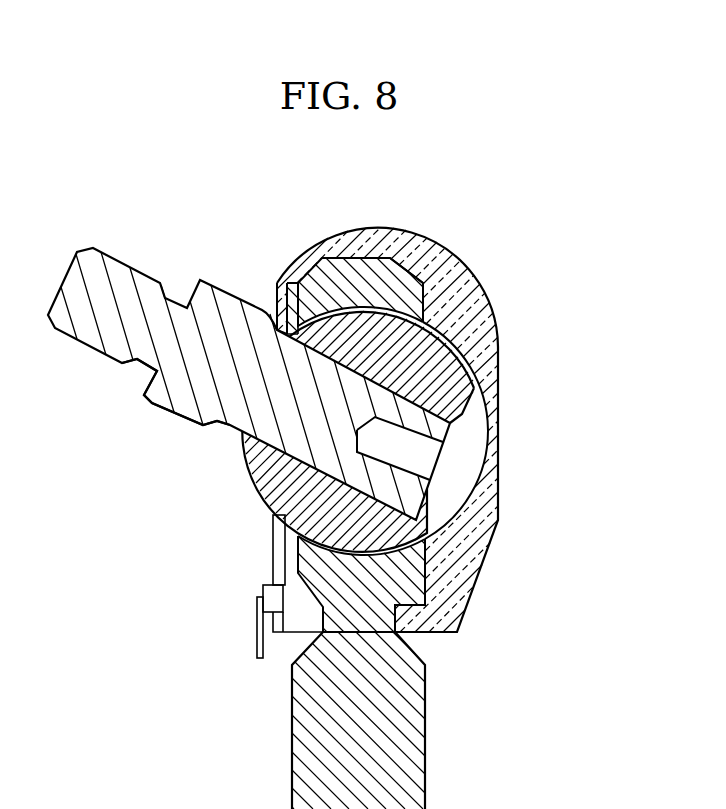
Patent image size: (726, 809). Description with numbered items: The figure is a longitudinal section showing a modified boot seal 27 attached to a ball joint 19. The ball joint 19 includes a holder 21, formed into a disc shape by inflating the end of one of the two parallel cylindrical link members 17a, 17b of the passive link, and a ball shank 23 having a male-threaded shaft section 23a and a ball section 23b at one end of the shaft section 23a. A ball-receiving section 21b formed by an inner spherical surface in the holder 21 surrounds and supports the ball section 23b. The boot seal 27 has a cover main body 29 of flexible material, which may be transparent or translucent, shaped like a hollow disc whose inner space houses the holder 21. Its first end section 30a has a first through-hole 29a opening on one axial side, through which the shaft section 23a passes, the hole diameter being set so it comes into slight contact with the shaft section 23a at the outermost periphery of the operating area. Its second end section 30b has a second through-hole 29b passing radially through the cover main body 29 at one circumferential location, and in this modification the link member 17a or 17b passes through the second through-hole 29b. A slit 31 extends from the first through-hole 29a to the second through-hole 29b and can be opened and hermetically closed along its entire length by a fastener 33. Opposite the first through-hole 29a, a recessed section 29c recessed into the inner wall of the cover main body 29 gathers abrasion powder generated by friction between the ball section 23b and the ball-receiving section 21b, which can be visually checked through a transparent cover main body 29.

The link member 17a is at (298, 721).
The link member 17b is at (358, 720).
The ball joint 19 is at (231, 384).
The holder 21 is at (328, 256).
The ball-receiving section 21b is at (400, 300).
The ball shank 23 is at (95, 487).
The shaft section 23a is at (153, 408).
The ball section 23b is at (252, 488).
The boot seal 27 is at (518, 338).
The cover main body 29 is at (453, 252).
The first through-hole 29a is at (268, 340).
The second through-hole 29b is at (393, 620).
The recessed section 29c is at (480, 474).
The first end section 30a is at (288, 287).
The second end section 30b is at (433, 603).
The slit 31 is at (280, 562).
The fastener 33 is at (257, 602).